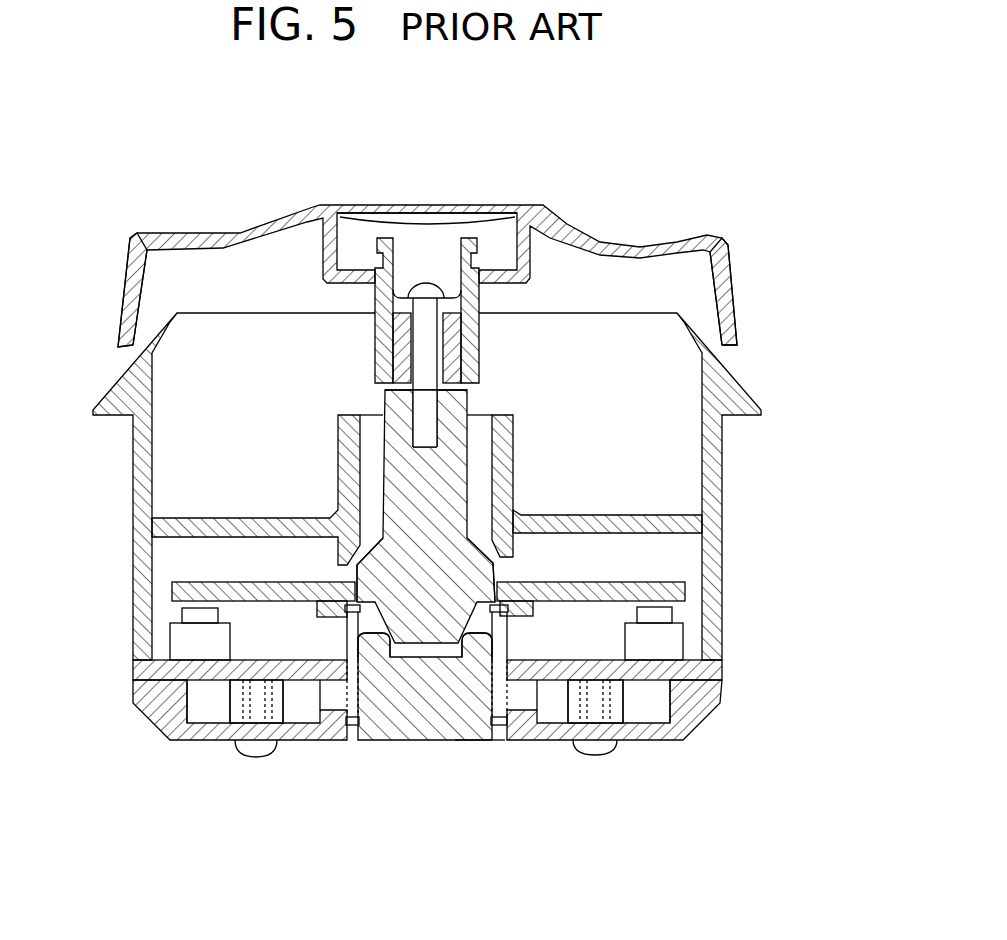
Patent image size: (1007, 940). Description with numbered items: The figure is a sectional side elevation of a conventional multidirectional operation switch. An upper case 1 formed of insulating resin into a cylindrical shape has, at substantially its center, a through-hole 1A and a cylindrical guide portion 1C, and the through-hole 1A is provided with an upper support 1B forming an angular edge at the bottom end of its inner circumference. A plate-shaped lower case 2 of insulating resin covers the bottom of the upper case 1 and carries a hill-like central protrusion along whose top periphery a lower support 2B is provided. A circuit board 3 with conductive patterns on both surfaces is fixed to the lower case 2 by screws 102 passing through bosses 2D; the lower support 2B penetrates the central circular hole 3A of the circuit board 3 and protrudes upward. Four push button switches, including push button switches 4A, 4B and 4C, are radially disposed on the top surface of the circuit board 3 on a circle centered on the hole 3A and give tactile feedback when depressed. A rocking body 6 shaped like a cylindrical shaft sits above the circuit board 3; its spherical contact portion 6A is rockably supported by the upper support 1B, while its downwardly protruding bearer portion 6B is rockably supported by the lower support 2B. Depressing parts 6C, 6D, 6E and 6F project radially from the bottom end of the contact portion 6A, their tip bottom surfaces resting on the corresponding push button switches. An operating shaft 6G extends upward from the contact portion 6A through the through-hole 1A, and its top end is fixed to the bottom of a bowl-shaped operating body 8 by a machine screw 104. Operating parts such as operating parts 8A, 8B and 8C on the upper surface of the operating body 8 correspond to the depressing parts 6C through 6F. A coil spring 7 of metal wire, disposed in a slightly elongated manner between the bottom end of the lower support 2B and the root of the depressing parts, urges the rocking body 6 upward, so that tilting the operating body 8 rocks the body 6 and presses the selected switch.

The upper case 1 is at (732, 477).
The through-hole 1A is at (483, 443).
The upper support 1B is at (512, 553).
The cylindrical guide portion 1C is at (505, 470).
The lower case 2 is at (668, 745).
The lower support 2B is at (532, 740).
The bosses 2D is at (227, 737).
The circuit board 3 is at (165, 675).
The central circular hole 3A is at (332, 688).
The push button switch 4A is at (676, 638).
The push button switch 4B is at (183, 642).
The push button switch 4C is at (470, 747).
The rocking body 6 is at (380, 500).
The spherical contact portion 6A is at (353, 577).
The bearer portion 6B is at (430, 627).
The depressing part 6C is at (665, 593).
The depressing part 6D is at (175, 590).
The depressing part 6E is at (425, 748).
The depressing part 6F is at (477, 645).
The operating shaft 6G is at (380, 397).
The coil spring 7 is at (350, 723).
The operating body 8 is at (320, 207).
The operating part 8A is at (680, 232).
The operating part 8B is at (165, 233).
The operating part 8C is at (448, 197).
The screws 102 is at (255, 757).
The machine screw 104 is at (422, 282).